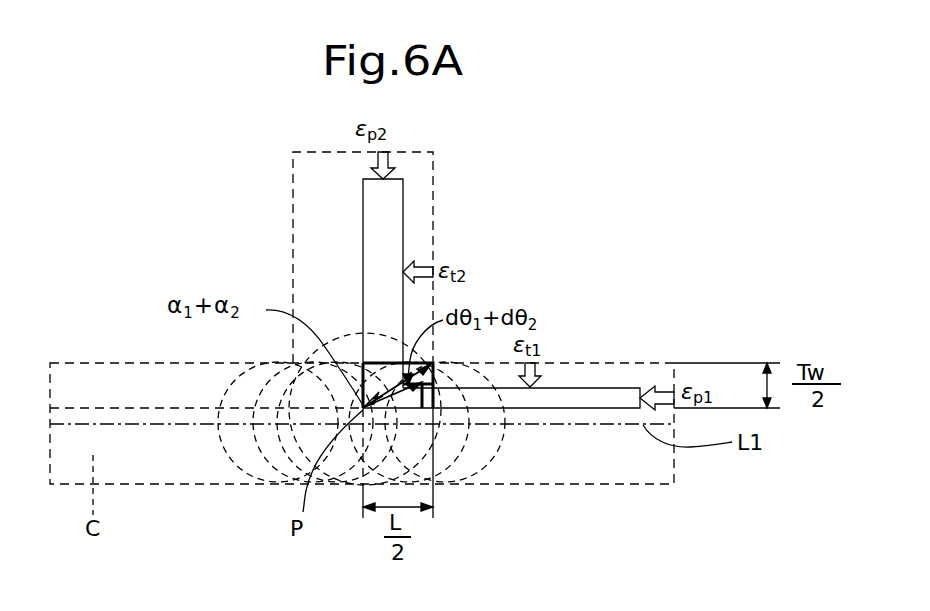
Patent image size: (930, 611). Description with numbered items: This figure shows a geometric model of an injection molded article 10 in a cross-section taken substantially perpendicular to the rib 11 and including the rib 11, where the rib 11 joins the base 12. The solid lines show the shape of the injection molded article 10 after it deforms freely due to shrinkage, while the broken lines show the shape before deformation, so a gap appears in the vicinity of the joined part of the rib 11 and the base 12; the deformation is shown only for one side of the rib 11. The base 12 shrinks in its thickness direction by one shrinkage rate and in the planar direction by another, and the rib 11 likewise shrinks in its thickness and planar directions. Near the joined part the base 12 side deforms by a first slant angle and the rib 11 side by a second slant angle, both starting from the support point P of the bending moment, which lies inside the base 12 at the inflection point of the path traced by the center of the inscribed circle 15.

The injection molded article 10 is at (540, 348).
The rib 11 is at (403, 208).
The base 12 is at (590, 387).
The inscribed circle 15 is at (481, 446).